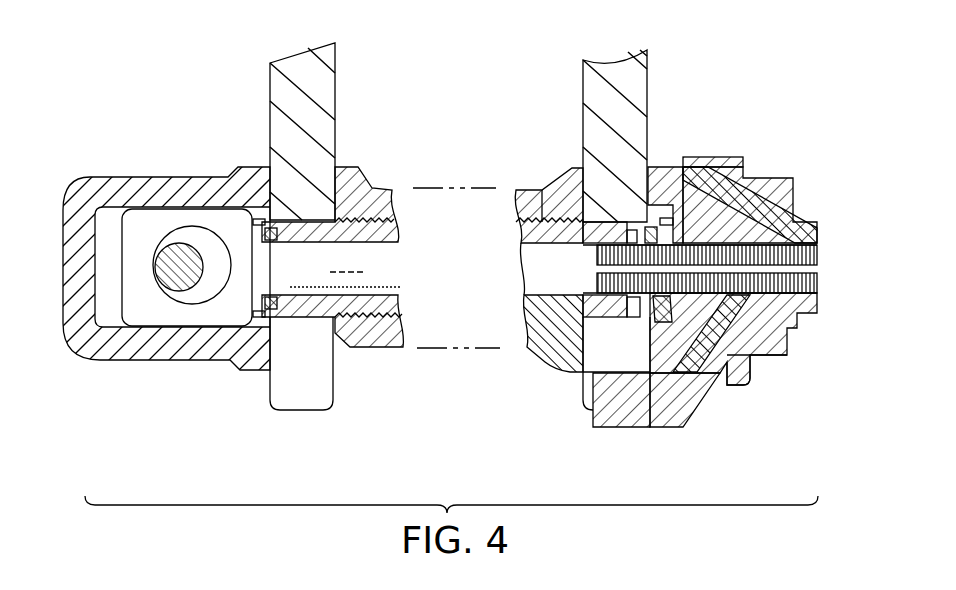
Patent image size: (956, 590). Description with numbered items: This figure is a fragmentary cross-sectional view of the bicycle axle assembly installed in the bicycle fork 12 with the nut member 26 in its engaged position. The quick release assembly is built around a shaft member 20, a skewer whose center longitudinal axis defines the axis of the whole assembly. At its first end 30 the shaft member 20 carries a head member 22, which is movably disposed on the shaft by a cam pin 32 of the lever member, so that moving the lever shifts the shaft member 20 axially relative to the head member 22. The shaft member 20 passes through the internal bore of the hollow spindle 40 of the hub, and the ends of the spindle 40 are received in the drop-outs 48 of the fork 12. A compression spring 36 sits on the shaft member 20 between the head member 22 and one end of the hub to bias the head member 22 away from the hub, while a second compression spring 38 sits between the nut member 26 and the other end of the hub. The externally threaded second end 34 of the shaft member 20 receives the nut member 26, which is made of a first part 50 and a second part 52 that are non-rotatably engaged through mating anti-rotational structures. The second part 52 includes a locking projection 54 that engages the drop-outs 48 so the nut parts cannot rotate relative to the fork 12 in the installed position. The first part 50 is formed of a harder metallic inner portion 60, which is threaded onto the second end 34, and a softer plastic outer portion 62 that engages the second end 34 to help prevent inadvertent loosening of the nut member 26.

The bicycle fork 12 is at (656, 80).
The shaft member 20 is at (352, 238).
The head member 22 is at (80, 177).
The nut member 26 is at (714, 118).
The first end 30 is at (150, 306).
The cam pin 32 is at (186, 227).
The second end 34 is at (792, 264).
The compression spring 36 is at (277, 309).
The compression spring 38 is at (634, 313).
The spindle 40 is at (558, 188).
The drop-outs 48 is at (306, 390).
The first part 50 is at (665, 158).
The second part 52 is at (777, 164).
The locking projection 54 is at (641, 428).
The inner portion 60 is at (677, 362).
The outer portion 62 is at (714, 366).